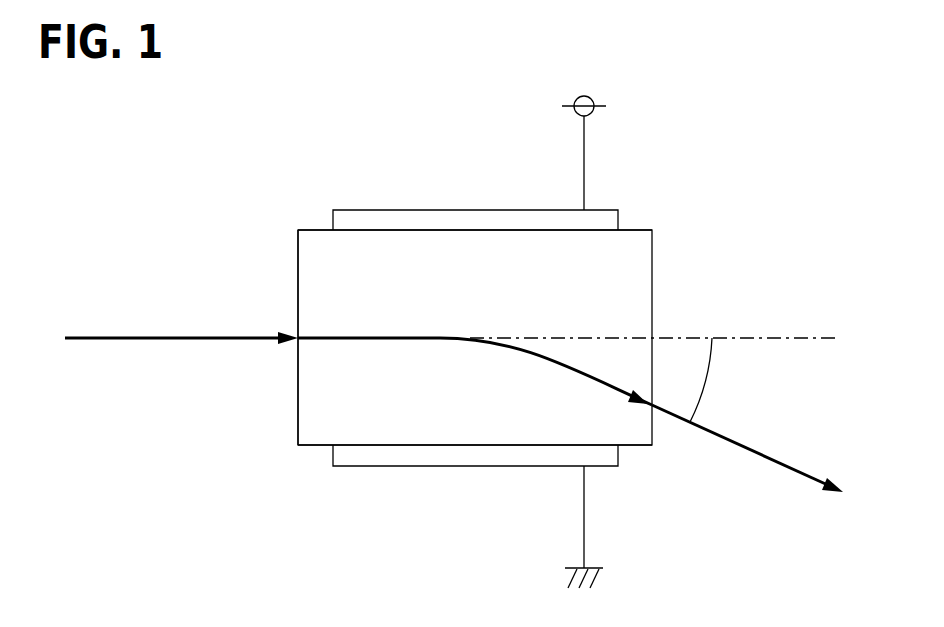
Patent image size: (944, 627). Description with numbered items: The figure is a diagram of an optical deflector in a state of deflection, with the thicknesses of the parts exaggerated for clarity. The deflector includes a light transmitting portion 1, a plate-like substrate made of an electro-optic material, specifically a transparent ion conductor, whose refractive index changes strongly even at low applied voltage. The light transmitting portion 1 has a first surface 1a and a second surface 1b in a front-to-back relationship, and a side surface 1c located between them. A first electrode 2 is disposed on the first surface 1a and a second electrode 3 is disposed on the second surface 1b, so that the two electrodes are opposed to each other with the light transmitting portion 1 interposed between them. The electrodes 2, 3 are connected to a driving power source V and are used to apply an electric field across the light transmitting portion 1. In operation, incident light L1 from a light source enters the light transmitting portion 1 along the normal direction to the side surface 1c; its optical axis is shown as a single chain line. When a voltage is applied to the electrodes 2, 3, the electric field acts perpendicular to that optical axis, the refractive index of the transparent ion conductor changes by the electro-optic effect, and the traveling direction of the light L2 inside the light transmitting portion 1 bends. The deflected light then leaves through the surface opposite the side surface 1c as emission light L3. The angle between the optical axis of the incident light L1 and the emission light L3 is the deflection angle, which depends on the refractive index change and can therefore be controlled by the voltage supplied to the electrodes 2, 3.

The light transmitting portion 1 is at (622, 283).
The first surface 1a is at (313, 229).
The second surface 1b is at (312, 447).
The side surface 1c is at (297, 278).
The first electrode 2 is at (477, 223).
The second electrode 3 is at (470, 455).
The driving power source V is at (572, 151).
The incident light L1 is at (166, 334).
The light that has entered the light transmitting portion L2 is at (410, 334).
The emission light L3 is at (717, 437).